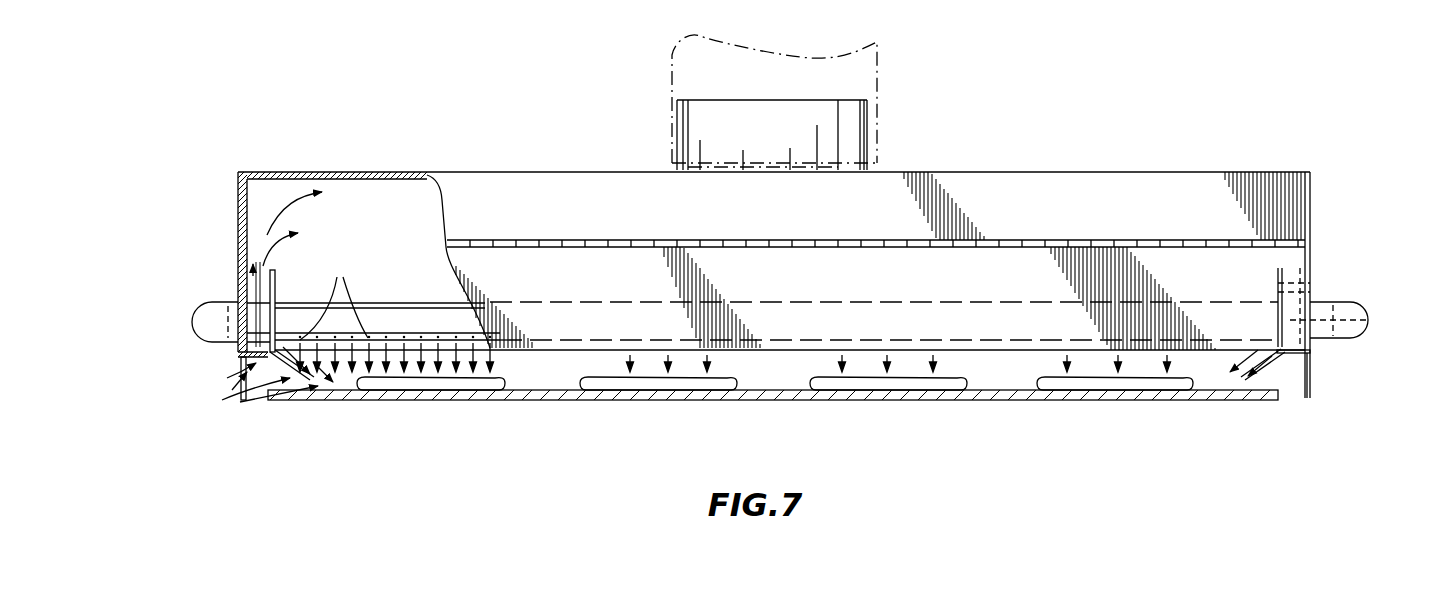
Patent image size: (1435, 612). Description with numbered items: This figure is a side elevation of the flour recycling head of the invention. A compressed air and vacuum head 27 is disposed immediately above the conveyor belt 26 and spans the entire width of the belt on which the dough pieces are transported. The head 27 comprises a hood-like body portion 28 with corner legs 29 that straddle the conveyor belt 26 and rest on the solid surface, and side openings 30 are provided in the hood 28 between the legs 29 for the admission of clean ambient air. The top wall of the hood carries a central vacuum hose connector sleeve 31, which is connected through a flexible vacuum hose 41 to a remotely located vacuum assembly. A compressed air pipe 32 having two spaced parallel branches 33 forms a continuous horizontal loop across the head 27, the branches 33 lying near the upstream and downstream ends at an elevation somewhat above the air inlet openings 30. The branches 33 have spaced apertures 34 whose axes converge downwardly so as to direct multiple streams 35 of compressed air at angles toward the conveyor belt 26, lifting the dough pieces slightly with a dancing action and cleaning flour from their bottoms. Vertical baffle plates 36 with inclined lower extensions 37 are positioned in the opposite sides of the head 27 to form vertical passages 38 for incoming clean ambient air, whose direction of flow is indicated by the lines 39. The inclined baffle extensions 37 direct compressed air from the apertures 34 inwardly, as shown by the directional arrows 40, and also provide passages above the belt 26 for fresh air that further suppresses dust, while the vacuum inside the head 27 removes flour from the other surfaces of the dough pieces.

The conveyor belt 26 is at (538, 400).
The compressed air and vacuum head 27 is at (1003, 193).
The hood-like body portion 28 is at (1260, 262).
The corner legs 29 is at (240, 392).
The side openings 30 is at (1008, 372).
The vacuum hose connector sleeve 31 is at (845, 125).
The compressed air pipe 32 is at (202, 326).
The pipe branches 33 is at (392, 310).
The spaced apertures 34 is at (776, 296).
The compressed air streams 35 is at (450, 345).
The vertical baffle plates 36 is at (276, 290).
The inclined lower extensions 37 is at (298, 383).
The vertical passages 38 is at (262, 316).
The lines 39 is at (267, 228).
The directional arrows 40 is at (300, 356).
The flexible vacuum hose 41 is at (672, 70).